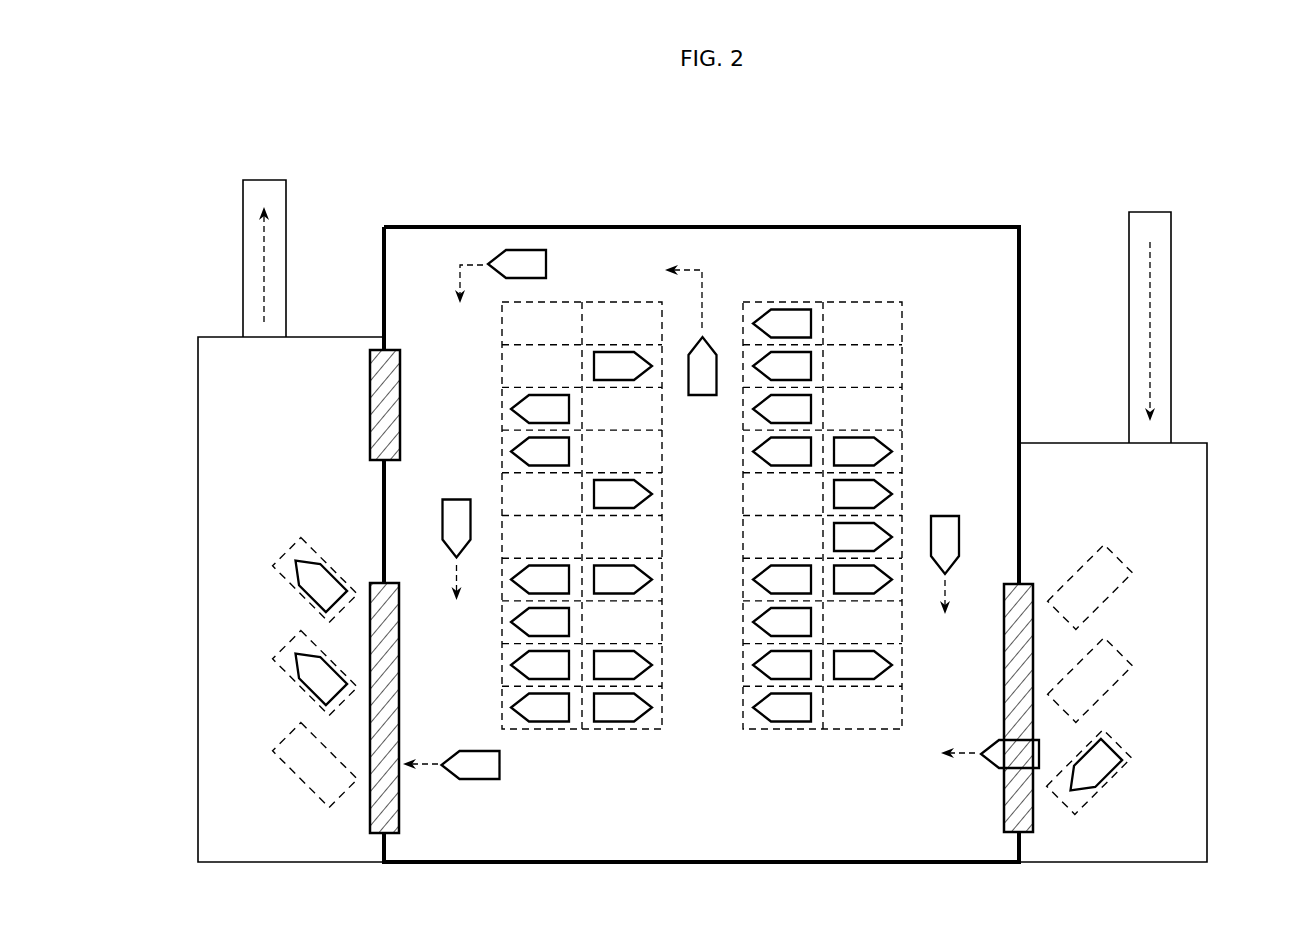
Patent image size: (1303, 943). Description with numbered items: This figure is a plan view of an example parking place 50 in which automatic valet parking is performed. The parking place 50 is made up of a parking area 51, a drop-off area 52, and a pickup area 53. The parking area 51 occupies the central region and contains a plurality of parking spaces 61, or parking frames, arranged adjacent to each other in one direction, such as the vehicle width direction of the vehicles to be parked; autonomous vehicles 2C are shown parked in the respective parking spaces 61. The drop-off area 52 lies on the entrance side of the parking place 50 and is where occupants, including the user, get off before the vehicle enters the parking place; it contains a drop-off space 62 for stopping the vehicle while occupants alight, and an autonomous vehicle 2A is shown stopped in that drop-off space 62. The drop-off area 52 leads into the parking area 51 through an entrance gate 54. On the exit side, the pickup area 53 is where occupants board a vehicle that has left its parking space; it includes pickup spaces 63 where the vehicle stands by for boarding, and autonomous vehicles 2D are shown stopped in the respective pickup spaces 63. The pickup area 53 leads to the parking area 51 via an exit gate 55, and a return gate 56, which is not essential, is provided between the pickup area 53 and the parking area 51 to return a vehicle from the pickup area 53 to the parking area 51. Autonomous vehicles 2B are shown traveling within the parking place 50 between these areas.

The parking place 50 is at (1078, 145).
The parking area 51 is at (931, 227).
The drop-off area 52 is at (1207, 497).
The pickup area 53 is at (198, 427).
The entrance gate 54 is at (1005, 832).
The exit gate 55 is at (400, 780).
The return gate 56 is at (402, 370).
The parking space 61 is at (628, 300).
The drop-off space 62 is at (1135, 752).
The pickup space 63 is at (296, 545).
The autonomous vehicle 2A is at (1108, 777).
The autonomous vehicles 2B is at (522, 250).
The autonomous vehicles 2C is at (811, 318).
The autonomous vehicles 2D is at (297, 578).